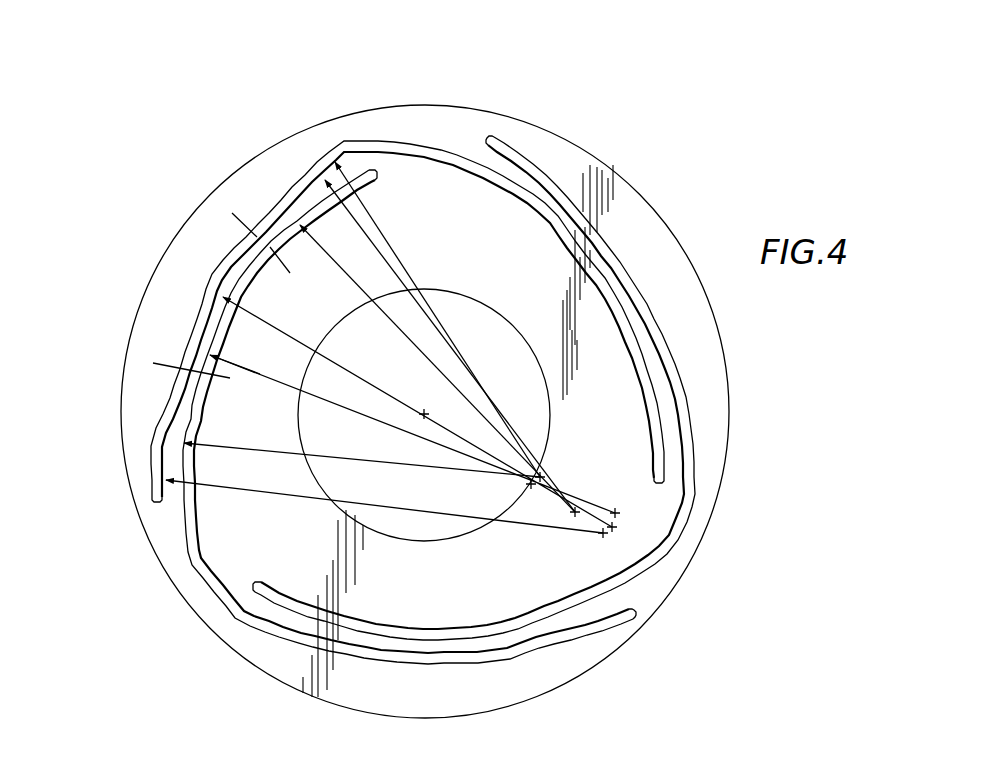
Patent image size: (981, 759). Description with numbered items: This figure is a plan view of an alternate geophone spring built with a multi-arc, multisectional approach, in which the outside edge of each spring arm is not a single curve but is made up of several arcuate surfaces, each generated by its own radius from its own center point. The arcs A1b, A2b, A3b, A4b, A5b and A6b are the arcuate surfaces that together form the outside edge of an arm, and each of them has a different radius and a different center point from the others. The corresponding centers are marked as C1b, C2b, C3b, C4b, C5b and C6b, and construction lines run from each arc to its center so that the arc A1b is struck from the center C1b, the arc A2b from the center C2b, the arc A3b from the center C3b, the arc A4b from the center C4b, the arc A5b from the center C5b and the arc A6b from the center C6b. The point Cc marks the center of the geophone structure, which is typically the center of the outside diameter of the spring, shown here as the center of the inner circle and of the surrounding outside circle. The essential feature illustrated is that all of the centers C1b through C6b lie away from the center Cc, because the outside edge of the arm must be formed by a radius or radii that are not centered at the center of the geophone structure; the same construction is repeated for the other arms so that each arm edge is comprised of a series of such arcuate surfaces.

The arc A1b is at (223, 297).
The arc A2b is at (181, 429).
The arc A3b is at (213, 327).
The arc A4b is at (310, 202).
The arc A5b is at (335, 162).
The arc A6b is at (160, 464).
The center point C1b is at (587, 499).
The center point C2b is at (560, 465).
The center point C3b is at (628, 500).
The center point C4b is at (538, 497).
The center point C5b is at (589, 545).
The center point C6b is at (632, 525).
The center of the geophone structure Cc is at (418, 403).